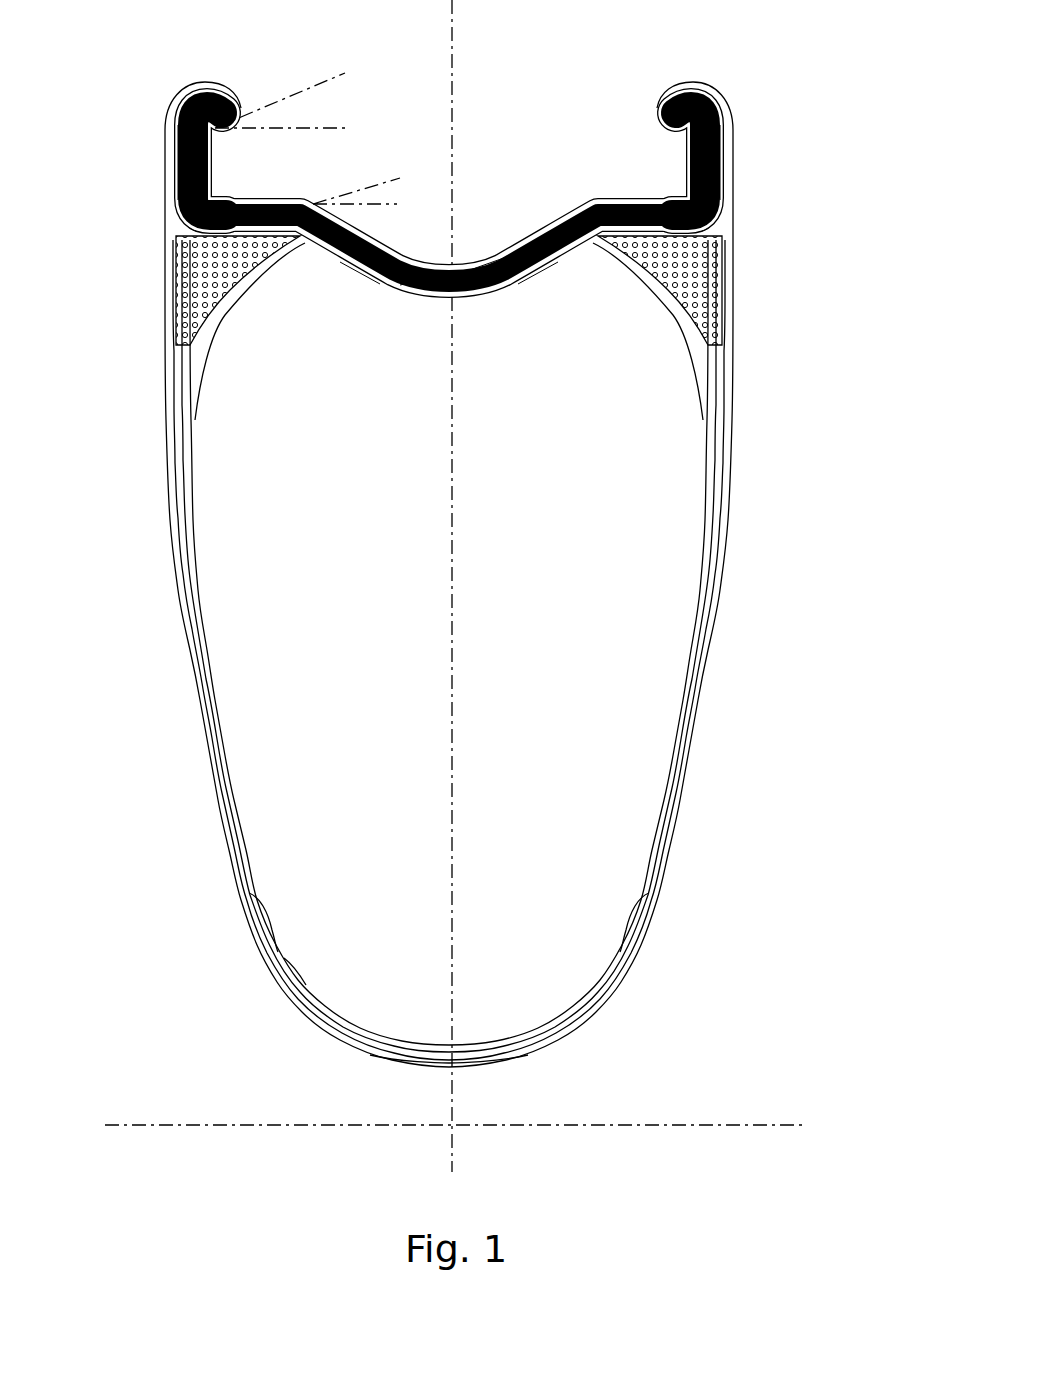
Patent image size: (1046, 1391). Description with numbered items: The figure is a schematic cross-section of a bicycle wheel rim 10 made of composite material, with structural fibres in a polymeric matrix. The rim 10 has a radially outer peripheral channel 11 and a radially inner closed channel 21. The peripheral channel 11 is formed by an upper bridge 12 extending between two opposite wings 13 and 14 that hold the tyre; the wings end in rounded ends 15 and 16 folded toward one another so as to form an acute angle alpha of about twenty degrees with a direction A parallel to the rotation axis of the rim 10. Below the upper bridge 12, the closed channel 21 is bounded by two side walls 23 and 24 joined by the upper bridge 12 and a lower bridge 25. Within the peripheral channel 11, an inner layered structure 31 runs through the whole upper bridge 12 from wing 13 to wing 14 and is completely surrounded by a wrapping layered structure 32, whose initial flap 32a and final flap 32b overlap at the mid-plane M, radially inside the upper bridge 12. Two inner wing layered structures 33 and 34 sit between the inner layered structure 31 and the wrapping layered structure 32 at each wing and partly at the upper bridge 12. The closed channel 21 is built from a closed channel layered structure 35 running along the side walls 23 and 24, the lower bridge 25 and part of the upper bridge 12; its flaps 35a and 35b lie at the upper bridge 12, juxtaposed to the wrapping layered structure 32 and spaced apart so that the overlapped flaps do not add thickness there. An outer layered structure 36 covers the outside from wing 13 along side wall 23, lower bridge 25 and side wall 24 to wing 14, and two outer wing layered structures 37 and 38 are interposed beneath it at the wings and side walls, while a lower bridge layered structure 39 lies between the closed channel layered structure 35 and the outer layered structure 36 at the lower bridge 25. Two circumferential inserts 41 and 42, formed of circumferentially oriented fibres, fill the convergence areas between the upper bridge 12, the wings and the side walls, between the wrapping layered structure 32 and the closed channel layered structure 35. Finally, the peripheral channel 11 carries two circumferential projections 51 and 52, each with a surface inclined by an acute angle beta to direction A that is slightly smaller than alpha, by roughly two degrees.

The rim 10 is at (748, 803).
The peripheral channel 11 is at (548, 124).
The upper bridge 12 is at (372, 310).
The wing 13 is at (152, 128).
The wing 14 is at (743, 133).
The rounded end 15 is at (243, 104).
The rounded end 16 is at (653, 101).
The closed channel 21 is at (590, 575).
The side wall 23 is at (180, 653).
The side wall 24 is at (726, 577).
The lower bridge 25 is at (401, 1065).
The inner layered structure 31 is at (503, 270).
The wrapping layered structure 32 is at (481, 290).
The initial flap 32a is at (448, 305).
The final flap 32b is at (427, 306).
The inner wing layered structure 33 is at (186, 208).
The inner wing layered structure 34 is at (712, 208).
The closed channel layered structure 35 is at (246, 890).
The initial flap 35a is at (363, 288).
The final flap 35b is at (528, 285).
The outer layered structure 36 is at (246, 908).
The outer wing layered structure 37 is at (177, 341).
The outer wing layered structure 38 is at (720, 355).
The lower bridge layered structure 39 is at (288, 968).
The circumferential insert 41 is at (195, 288).
The circumferential insert 42 is at (693, 280).
The circumferential projection 51 is at (313, 203).
The circumferential projection 52 is at (588, 201).
The mid-plane M is at (456, 926).
The direction parallel to the rim axis A is at (672, 1126).